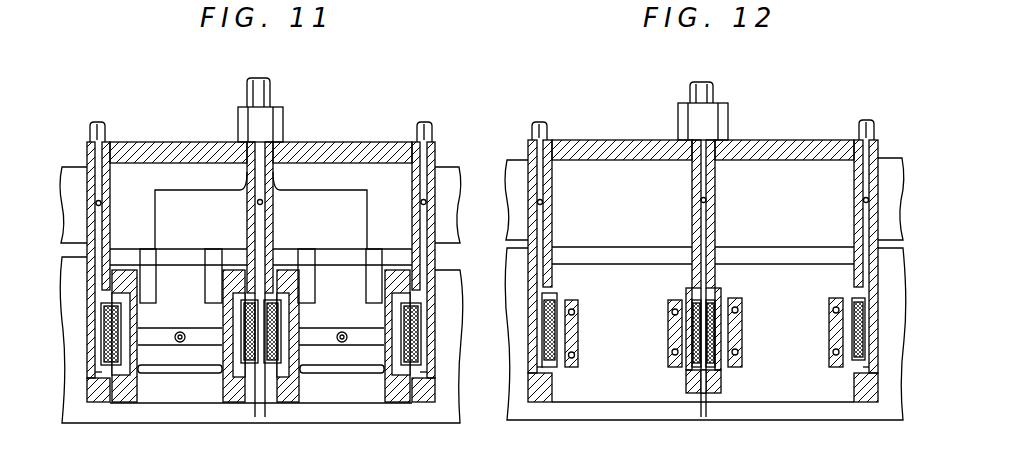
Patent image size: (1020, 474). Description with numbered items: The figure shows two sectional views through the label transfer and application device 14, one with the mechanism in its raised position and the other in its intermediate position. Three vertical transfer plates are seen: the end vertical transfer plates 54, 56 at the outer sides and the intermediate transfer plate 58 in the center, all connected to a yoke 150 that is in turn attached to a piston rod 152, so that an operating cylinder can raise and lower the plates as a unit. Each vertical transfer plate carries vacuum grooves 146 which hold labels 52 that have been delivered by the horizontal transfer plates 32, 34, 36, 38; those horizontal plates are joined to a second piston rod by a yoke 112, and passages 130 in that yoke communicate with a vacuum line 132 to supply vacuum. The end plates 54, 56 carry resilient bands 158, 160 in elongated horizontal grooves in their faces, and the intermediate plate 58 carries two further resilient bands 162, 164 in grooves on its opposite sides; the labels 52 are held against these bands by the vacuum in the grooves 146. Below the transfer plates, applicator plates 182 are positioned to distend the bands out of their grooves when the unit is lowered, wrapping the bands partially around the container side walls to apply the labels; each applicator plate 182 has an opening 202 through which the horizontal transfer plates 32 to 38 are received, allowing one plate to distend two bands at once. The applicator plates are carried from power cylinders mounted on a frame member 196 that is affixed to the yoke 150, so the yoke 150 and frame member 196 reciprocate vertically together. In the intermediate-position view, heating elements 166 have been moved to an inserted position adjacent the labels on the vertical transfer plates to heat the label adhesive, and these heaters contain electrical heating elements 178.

In FIG. 11, the label transfer and application device 14 is at (355, 100).
In FIG. 11, the horizontal transfer plate 32 is at (393, 392).
In FIG. 11, the horizontal transfer plate 34 is at (298, 392).
In FIG. 11, the horizontal transfer plate 36 is at (226, 390).
In FIG. 11, the horizontal transfer plate 38 is at (137, 390).
In FIG. 11, the label 52 is at (114, 372).
In FIG. 12, the label 52 is at (688, 293).
In FIG. 11, the end vertical transfer plate 54 is at (434, 173).
In FIG. 12, the end vertical transfer plate 54 is at (855, 193).
In FIG. 11, the end vertical transfer plate 56 is at (88, 176).
In FIG. 12, the end vertical transfer plate 56 is at (553, 217).
In FIG. 11, the intermediate transfer plate 58 is at (274, 205).
In FIG. 12, the intermediate transfer plate 58 is at (715, 216).
In FIG. 11, the yoke 112 is at (158, 192).
In FIG. 11, the passage 130 is at (200, 331).
In FIG. 11, the vacuum line 132 is at (336, 330).
In FIG. 11, the vacuum groove 146 is at (91, 401).
In FIG. 12, the vacuum groove 146 is at (540, 400).
In FIG. 11, the yoke 150 is at (385, 142).
In FIG. 12, the yoke 150 is at (815, 141).
In FIG. 11, the piston rod 152 is at (271, 91).
In FIG. 12, the piston rod 152 is at (713, 93).
In FIG. 11, the resilient band 158 is at (418, 311).
In FIG. 12, the resilient band 158 is at (853, 322).
In FIG. 11, the resilient band 160 is at (108, 317).
In FIG. 12, the resilient band 160 is at (548, 350).
In FIG. 11, the resilient band 162 is at (279, 352).
In FIG. 12, the resilient band 162 is at (722, 352).
In FIG. 11, the resilient band 164 is at (246, 344).
In FIG. 12, the resilient band 164 is at (689, 362).
In FIG. 12, the heating element 166 is at (669, 336).
In FIG. 12, the heating element 178 is at (580, 304).
In FIG. 11, the applicator plate 182 is at (177, 417).
In FIG. 12, the applicator plate 182 is at (617, 413).
In FIG. 11, the frame member 196 is at (451, 194).
In FIG. 12, the frame member 196 is at (888, 166).
In FIG. 11, the opening 202 is at (169, 254).
In FIG. 12, the opening 202 is at (629, 251).